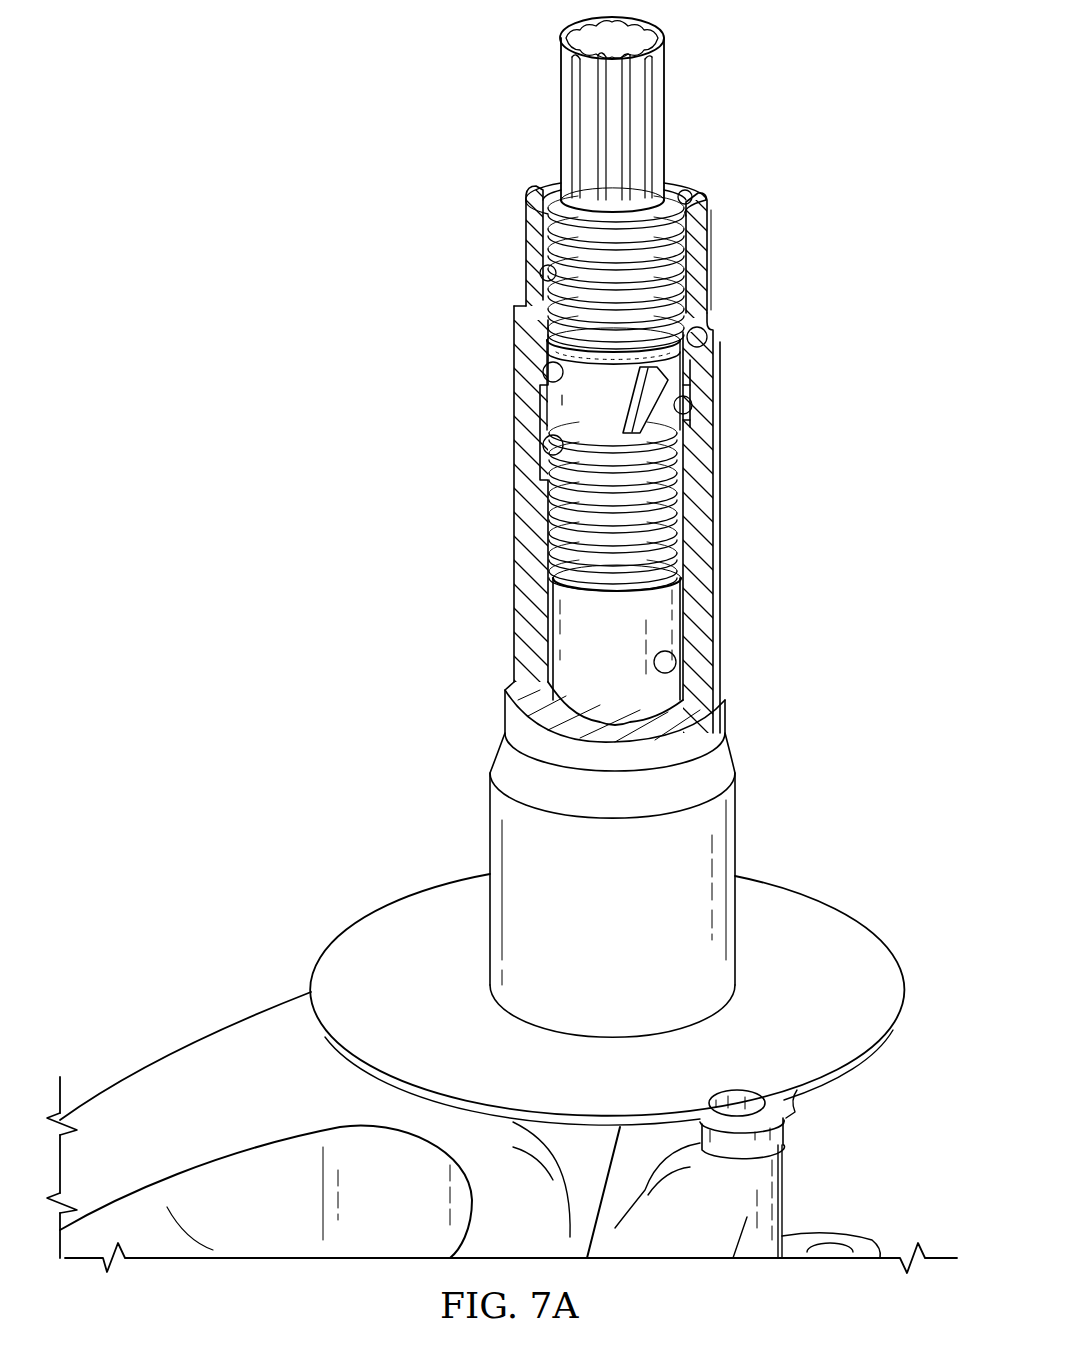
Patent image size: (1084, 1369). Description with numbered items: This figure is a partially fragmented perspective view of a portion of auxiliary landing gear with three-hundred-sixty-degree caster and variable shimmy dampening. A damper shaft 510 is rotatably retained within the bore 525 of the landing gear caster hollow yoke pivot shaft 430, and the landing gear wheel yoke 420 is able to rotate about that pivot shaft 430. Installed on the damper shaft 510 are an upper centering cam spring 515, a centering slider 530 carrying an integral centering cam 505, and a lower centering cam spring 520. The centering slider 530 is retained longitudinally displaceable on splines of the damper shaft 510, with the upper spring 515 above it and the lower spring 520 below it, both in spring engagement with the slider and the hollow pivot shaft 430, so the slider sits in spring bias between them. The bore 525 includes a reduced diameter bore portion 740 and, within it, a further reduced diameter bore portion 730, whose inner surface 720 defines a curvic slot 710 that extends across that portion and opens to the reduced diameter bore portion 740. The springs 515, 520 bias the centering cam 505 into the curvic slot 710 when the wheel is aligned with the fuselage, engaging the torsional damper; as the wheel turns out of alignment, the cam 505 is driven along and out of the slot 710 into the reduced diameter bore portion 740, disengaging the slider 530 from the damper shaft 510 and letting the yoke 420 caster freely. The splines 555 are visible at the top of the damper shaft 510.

The landing gear wheel yoke 420 is at (117, 1087).
The landing gear caster hollow yoke pivot shaft 430 is at (512, 565).
The centering cam 505 is at (668, 375).
The damper shaft 510 is at (675, 100).
The upper centering cam spring 515 is at (543, 208).
The lower centering cam spring 520 is at (553, 509).
The hollow yoke pivot shaft bore 525 is at (688, 196).
The centering slider 530 is at (545, 393).
The splines 555 is at (562, 116).
The curvic slot 710 is at (692, 400).
The inner surface 720 is at (546, 368).
The further reduced diameter bore portion 730 is at (546, 441).
The reduced diameter bore portion 740 is at (541, 268).